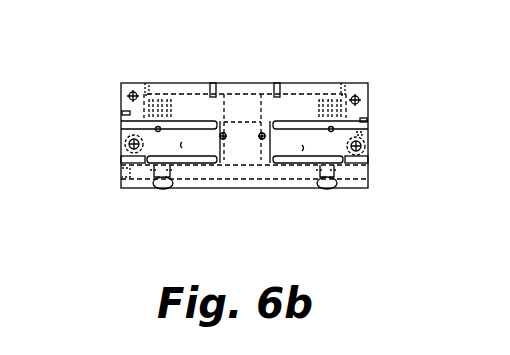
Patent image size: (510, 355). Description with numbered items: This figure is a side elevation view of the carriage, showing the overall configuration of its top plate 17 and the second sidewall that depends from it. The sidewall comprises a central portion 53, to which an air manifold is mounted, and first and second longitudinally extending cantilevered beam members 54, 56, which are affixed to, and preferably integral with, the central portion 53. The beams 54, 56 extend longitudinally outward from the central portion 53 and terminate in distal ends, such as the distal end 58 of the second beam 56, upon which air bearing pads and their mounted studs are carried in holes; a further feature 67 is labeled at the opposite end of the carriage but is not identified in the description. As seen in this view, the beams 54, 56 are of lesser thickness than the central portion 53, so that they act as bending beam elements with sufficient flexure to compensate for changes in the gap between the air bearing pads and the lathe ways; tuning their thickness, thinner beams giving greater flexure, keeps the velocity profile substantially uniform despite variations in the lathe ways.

The plate 17 is at (195, 87).
The central portion 53 is at (240, 135).
The first longitudinally extending cantilevered beam member 54 is at (328, 149).
The second longitudinally extending cantilevered beam member 56 is at (158, 148).
The distal end 58 is at (124, 136).
The right pivot bore 67 is at (364, 142).